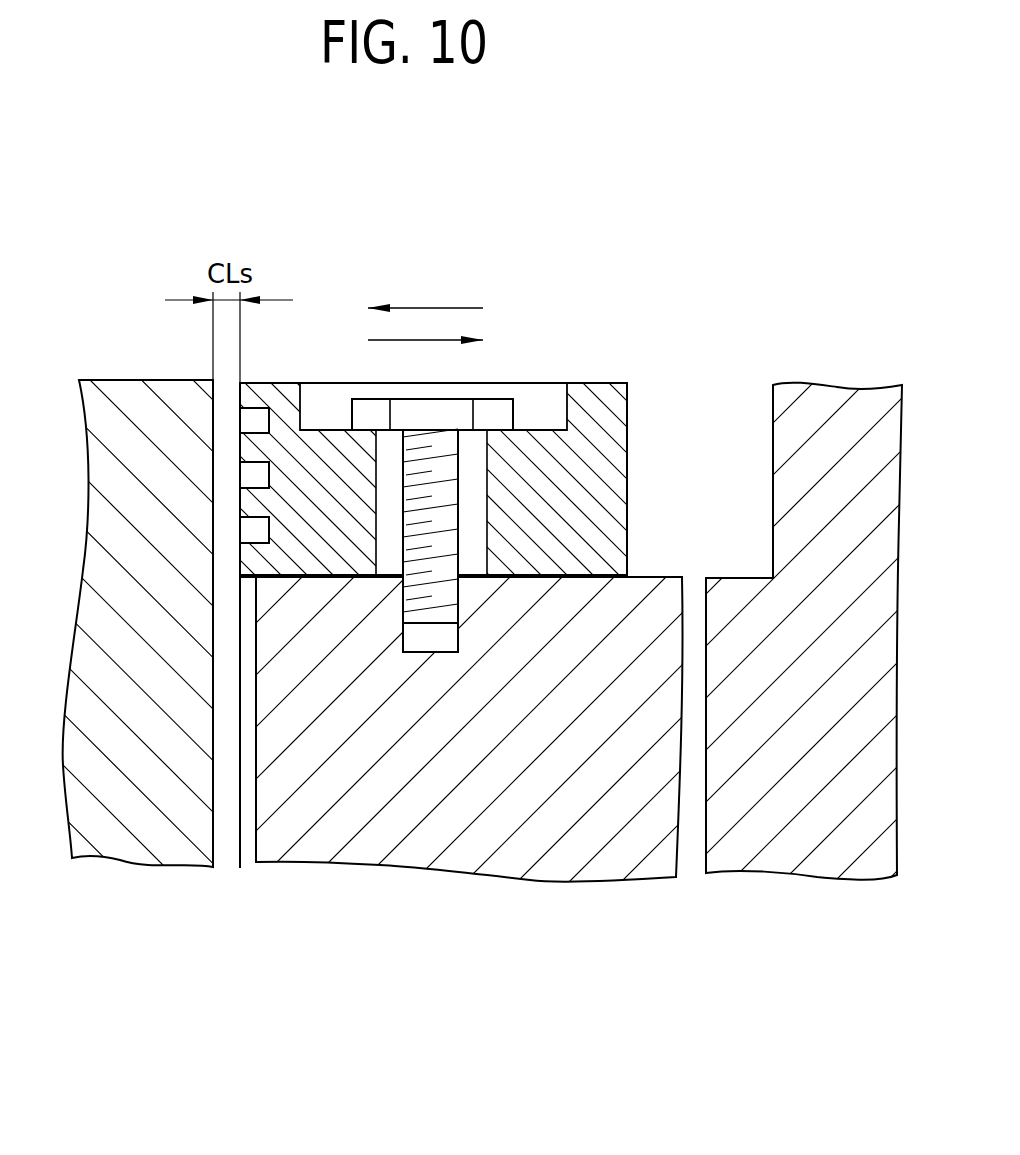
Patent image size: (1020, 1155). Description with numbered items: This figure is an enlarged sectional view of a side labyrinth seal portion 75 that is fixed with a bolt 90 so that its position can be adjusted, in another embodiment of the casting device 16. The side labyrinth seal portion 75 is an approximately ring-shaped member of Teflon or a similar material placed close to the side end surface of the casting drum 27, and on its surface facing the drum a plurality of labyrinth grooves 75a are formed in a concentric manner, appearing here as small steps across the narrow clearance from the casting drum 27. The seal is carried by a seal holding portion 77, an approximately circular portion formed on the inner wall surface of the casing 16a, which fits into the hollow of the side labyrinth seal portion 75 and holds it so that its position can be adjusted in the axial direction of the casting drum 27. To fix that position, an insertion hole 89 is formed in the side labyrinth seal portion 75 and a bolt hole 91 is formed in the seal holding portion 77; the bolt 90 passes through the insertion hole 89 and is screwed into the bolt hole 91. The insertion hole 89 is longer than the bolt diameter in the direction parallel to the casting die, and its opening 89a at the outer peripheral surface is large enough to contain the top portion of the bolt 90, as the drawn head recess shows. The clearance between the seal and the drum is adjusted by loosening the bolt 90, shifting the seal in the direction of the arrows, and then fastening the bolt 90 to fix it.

The casting device 16 is at (497, 990).
The casing 16a is at (839, 385).
The casting drum 27 is at (170, 866).
The side labyrinth seal portion 75 is at (427, 402).
The labyrinth grooves 75a is at (255, 532).
The seal holding portion 77 is at (657, 577).
The insertion hole 89 is at (470, 505).
The opening 89a is at (342, 428).
The bolt 90 is at (492, 398).
The bolt hole 91 is at (423, 637).